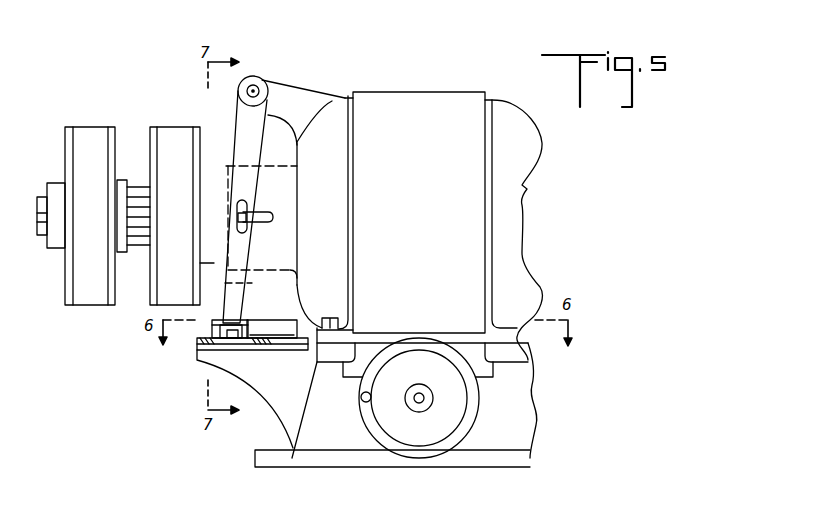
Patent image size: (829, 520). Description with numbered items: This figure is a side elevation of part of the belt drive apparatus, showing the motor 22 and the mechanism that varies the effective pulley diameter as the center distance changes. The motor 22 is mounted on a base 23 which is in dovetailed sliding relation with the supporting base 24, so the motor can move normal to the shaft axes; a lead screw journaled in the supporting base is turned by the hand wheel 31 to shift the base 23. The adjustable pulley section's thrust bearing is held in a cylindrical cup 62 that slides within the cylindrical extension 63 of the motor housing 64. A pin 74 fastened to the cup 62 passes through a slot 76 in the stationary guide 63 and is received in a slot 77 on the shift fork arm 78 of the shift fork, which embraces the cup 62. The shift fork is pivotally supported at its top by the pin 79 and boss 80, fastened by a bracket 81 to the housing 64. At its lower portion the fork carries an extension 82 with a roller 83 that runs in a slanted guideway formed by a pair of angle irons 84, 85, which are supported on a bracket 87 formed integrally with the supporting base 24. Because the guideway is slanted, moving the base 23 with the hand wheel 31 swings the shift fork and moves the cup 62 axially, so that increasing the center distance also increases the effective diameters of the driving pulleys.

The motor 22 is at (460, 92).
The base 23 is at (330, 352).
The supporting base 24 is at (337, 455).
The hand wheel 31 is at (440, 448).
The cylindrical cup 62 is at (206, 172).
The cylindrical extension 63 is at (277, 170).
The motor housing 64 is at (325, 110).
The pin 74 is at (233, 210).
The slot 76 is at (278, 222).
The slot 77 is at (238, 221).
The shift fork arm 78 is at (243, 124).
The pin 79 is at (258, 80).
The boss 80 is at (258, 82).
The bracket 81 is at (305, 90).
The extension 82 is at (228, 293).
The roller 83 is at (215, 345).
The angle iron 84 is at (213, 330).
The angle iron 85 is at (288, 322).
The bracket 87 is at (242, 360).